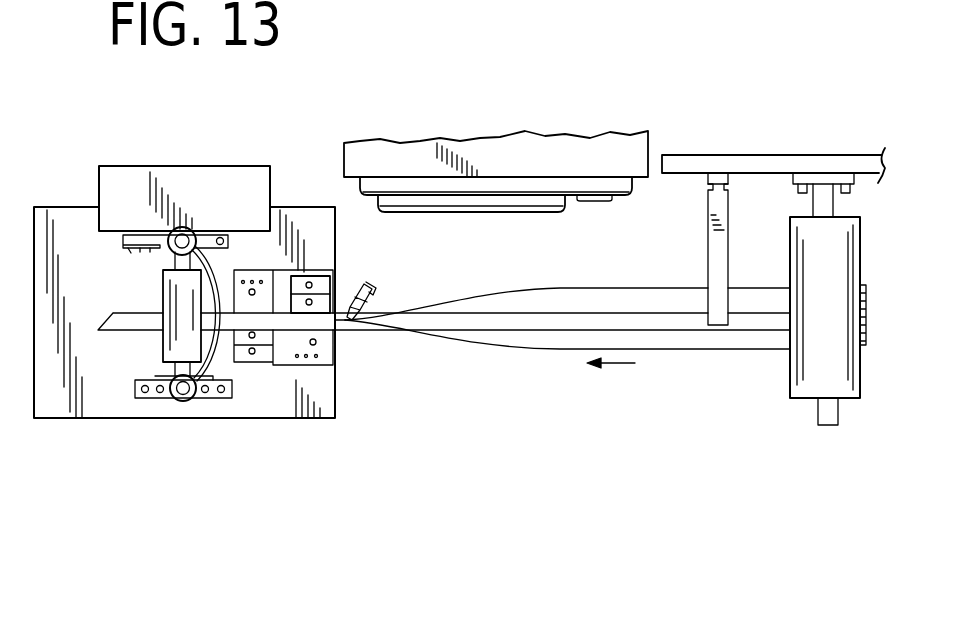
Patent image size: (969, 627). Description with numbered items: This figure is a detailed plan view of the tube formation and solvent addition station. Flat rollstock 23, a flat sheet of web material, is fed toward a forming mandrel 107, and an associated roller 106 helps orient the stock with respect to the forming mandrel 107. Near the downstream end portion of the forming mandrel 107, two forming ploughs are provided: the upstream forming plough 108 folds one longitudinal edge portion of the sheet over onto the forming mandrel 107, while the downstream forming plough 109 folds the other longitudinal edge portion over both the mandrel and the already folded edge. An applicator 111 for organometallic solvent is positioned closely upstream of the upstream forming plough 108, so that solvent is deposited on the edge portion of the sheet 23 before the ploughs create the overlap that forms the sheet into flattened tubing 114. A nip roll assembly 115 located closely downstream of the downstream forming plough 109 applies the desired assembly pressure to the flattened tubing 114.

The flat rollstock 23 is at (732, 337).
The roller 106 is at (843, 392).
The forming mandrel 107 is at (672, 320).
The upstream forming plough 108 is at (323, 288).
The downstream forming plough 109 is at (242, 350).
The applicator 111 is at (370, 284).
The flattened tubing 114 is at (143, 323).
The nip roll assembly 115 is at (180, 293).